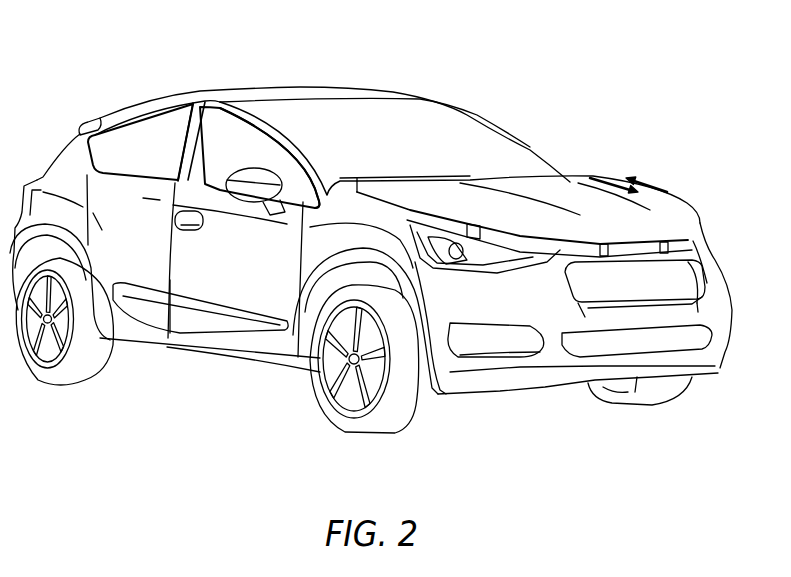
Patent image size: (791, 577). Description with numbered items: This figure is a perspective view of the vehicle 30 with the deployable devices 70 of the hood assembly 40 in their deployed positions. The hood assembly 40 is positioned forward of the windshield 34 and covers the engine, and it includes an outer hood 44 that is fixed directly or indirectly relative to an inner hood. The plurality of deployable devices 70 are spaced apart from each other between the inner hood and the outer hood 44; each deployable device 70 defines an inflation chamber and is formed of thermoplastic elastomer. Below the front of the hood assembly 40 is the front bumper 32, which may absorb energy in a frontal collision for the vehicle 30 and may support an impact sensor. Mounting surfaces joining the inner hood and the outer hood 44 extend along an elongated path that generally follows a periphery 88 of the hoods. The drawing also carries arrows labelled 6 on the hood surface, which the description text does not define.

The vehicle 30 is at (456, 74).
The front bumper 32 is at (727, 310).
The windshield 34 is at (513, 137).
The hood assembly 40 is at (701, 197).
The outer hood 44 is at (577, 200).
The lateral direction arrows 6 is at (637, 198).
The periphery 88 is at (678, 240).
The deployable devices 70 is at (444, 220).